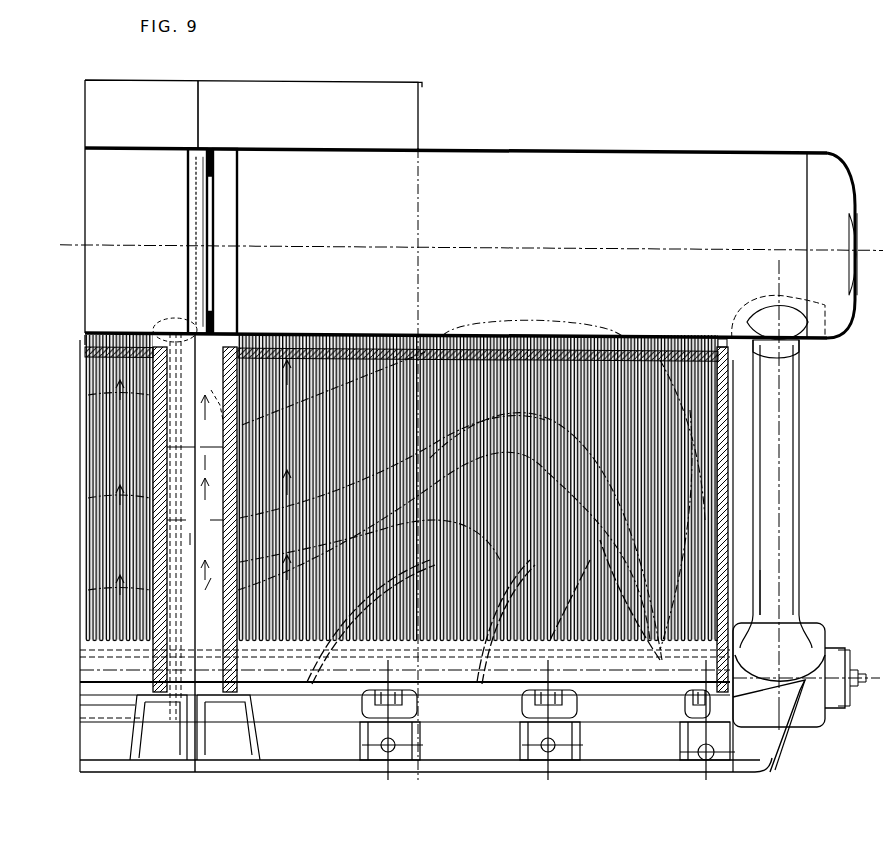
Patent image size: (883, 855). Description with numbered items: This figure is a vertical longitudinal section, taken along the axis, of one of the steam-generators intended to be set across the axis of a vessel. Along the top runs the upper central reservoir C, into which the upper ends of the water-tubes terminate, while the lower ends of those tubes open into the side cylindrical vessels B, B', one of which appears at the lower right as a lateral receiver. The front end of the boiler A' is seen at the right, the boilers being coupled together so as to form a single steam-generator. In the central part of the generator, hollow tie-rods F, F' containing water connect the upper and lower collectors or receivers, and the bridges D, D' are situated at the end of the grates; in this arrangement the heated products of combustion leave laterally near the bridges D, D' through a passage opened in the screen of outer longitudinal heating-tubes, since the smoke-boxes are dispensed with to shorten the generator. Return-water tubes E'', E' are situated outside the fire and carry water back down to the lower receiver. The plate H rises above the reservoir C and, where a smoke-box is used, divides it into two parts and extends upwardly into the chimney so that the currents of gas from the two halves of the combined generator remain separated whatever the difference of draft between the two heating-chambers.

The plate H is at (212, 207).
The upper central reservoir C is at (471, 243).
The hollow tie-rod F is at (188, 545).
The hollow tie-rod F' is at (205, 423).
The bridge D is at (188, 529).
The bridge D' is at (211, 551).
The front end of the boiler A' is at (732, 555).
The return-water tube E'' is at (778, 480).
The return-water tube E' is at (778, 539).
The side cylindrical vessel B is at (806, 693).
The side cylindrical vessel B' is at (786, 690).